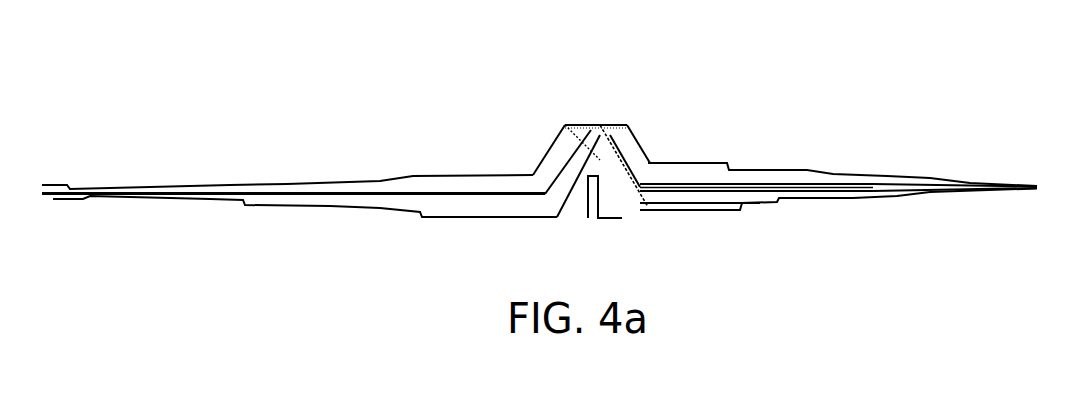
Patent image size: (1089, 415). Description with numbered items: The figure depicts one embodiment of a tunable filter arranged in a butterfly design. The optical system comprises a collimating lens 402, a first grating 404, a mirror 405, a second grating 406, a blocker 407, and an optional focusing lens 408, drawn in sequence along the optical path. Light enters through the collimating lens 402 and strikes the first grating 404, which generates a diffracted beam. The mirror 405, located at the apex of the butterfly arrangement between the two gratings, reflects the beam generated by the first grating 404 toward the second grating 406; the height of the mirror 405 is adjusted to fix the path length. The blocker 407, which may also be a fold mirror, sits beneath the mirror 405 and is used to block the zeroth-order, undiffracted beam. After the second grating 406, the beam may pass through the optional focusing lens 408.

The collimating lens 402 is at (463, 217).
The first grating 404 is at (535, 175).
The mirror 405 is at (581, 124).
The second grating 406 is at (648, 162).
The blocker 407 is at (622, 218).
The focusing lens 408 is at (717, 210).